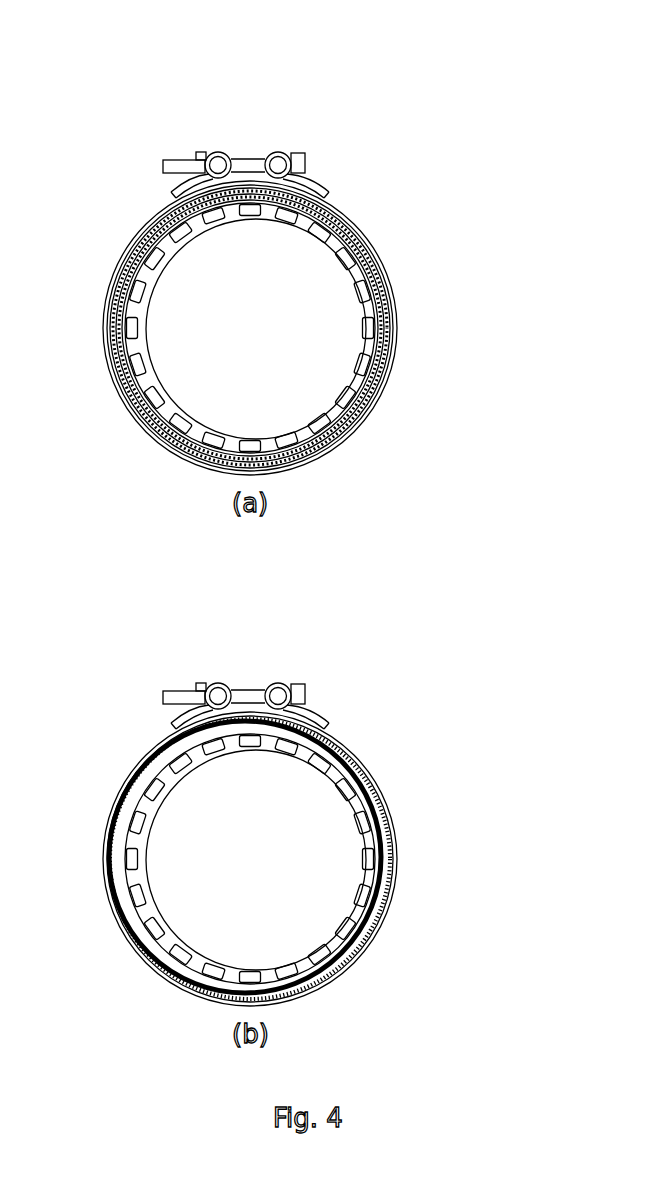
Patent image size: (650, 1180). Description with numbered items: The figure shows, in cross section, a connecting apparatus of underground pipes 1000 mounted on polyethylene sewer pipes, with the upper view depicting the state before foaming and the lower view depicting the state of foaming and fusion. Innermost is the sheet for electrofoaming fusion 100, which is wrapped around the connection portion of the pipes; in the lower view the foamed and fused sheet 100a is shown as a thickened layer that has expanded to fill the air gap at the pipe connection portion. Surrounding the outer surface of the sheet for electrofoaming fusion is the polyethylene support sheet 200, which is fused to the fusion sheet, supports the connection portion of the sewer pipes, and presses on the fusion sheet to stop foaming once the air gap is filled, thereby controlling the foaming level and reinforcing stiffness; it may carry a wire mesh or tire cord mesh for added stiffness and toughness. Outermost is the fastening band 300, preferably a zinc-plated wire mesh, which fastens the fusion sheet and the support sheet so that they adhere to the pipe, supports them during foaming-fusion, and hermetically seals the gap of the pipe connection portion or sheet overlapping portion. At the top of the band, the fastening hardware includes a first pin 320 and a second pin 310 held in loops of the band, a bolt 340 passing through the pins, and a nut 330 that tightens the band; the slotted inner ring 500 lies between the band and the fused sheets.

The clamp assembly 1000 is at (270, 511).
The sheet for electrofoaming fusion 100 is at (325, 200).
The inner band ring 100a is at (165, 740).
The polyethylene support sheet 200 is at (360, 238).
The fastening band 300 is at (292, 63).
The second pin 310 is at (269, 157).
The first pin 320 is at (216, 158).
The nut 330 is at (298, 157).
The bolt 340 is at (198, 158).
The slotted inner band 500 is at (372, 313).